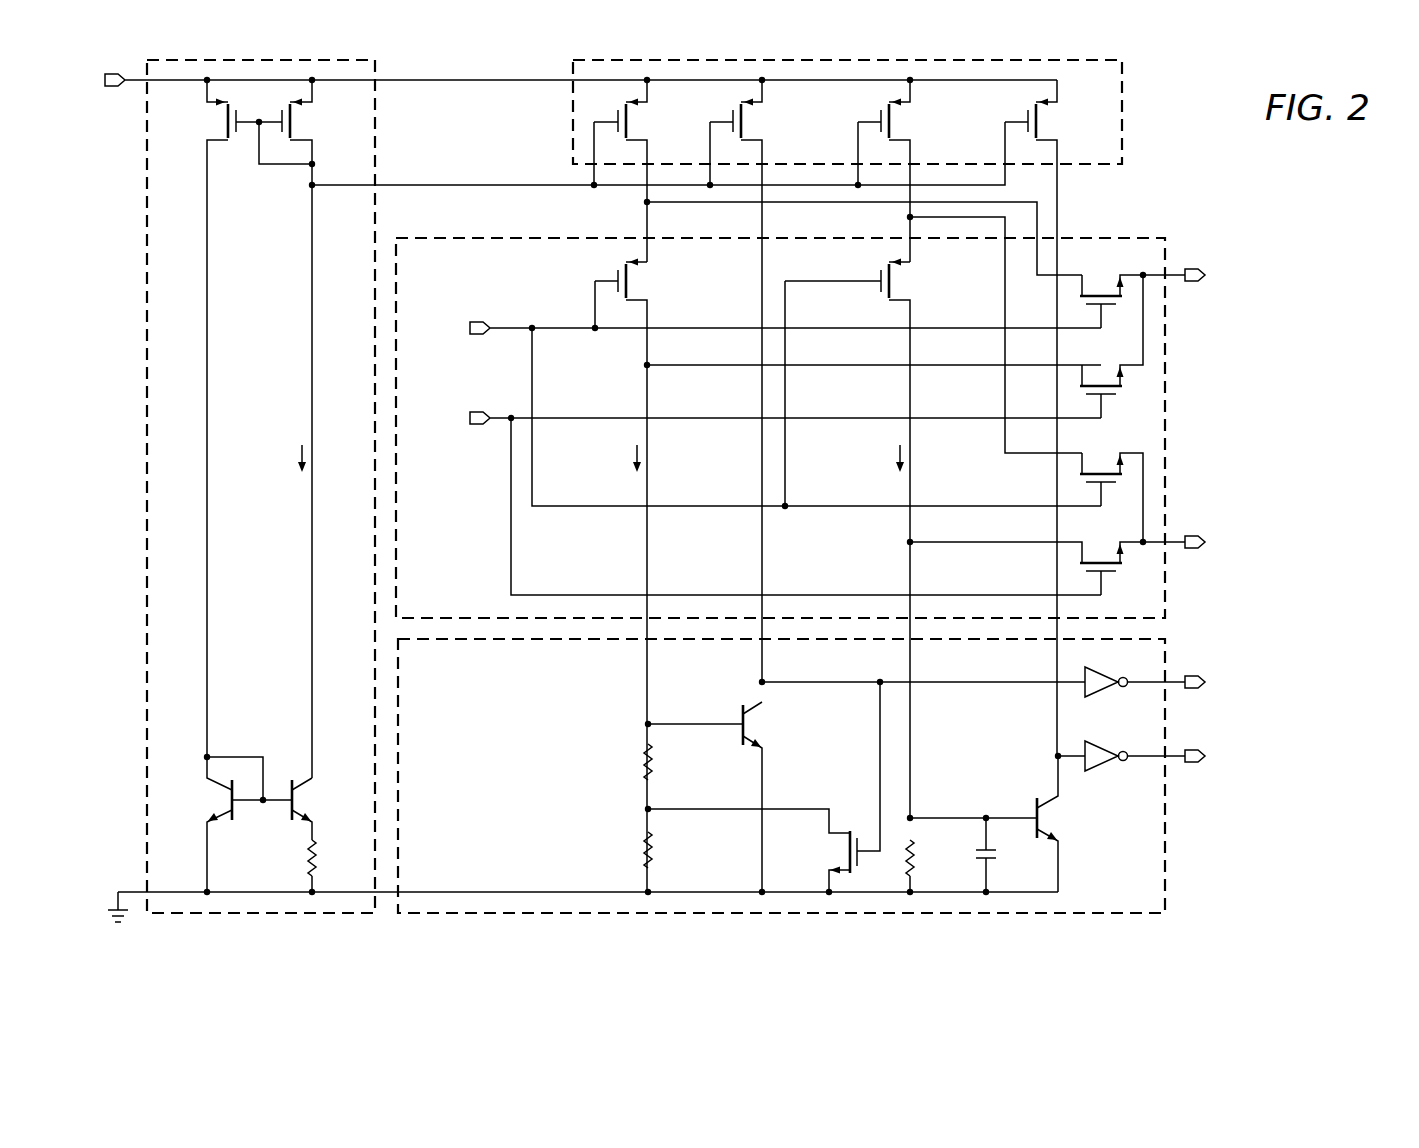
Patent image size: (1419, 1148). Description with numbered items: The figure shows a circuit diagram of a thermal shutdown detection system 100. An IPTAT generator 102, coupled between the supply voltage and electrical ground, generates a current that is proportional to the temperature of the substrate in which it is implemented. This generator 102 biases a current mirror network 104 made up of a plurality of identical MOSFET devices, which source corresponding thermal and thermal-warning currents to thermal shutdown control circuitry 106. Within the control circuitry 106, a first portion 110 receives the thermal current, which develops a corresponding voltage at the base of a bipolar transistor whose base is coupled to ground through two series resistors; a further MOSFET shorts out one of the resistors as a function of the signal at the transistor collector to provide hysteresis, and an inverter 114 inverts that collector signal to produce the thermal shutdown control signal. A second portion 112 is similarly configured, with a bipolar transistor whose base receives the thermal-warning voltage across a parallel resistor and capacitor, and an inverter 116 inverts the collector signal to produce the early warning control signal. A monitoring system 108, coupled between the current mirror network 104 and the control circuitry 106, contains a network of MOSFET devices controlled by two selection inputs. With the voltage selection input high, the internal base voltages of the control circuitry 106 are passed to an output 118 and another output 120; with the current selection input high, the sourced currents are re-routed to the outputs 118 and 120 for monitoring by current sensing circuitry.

The thermal shutdown detection system 100 is at (1297, 211).
The IPTAT generator 102 is at (147, 278).
The current mirror network 104 is at (1123, 102).
The thermal shutdown control circuitry 106 is at (1167, 828).
The monitoring system 108 is at (1167, 399).
The thermal shutdown control circuitry portion 110 is at (778, 748).
The thermal warning control circuitry portion 112 is at (1072, 842).
The inverter 114 is at (1106, 700).
The inverter 116 is at (1106, 775).
The output 118 is at (1203, 268).
The output 120 is at (1203, 535).